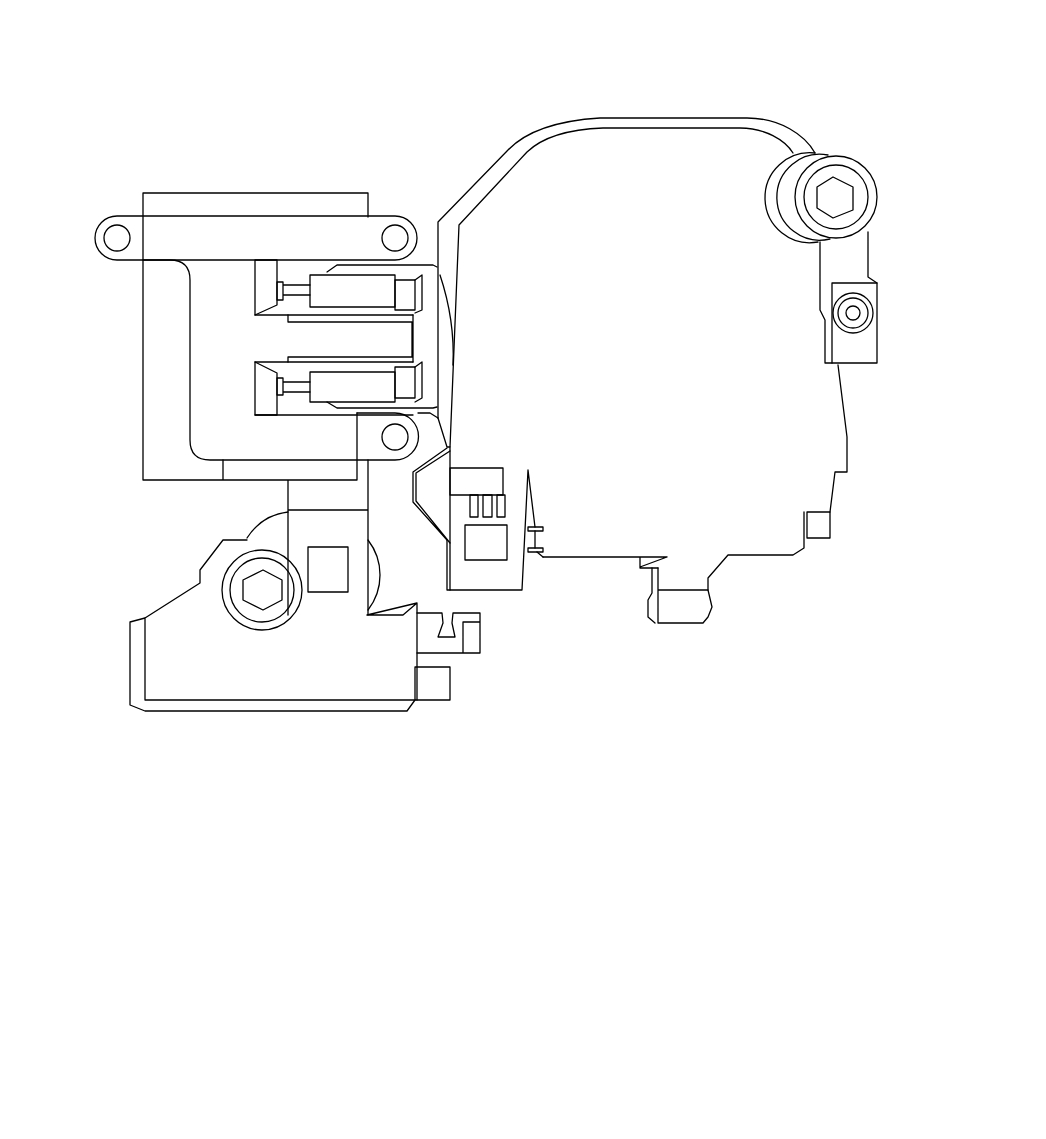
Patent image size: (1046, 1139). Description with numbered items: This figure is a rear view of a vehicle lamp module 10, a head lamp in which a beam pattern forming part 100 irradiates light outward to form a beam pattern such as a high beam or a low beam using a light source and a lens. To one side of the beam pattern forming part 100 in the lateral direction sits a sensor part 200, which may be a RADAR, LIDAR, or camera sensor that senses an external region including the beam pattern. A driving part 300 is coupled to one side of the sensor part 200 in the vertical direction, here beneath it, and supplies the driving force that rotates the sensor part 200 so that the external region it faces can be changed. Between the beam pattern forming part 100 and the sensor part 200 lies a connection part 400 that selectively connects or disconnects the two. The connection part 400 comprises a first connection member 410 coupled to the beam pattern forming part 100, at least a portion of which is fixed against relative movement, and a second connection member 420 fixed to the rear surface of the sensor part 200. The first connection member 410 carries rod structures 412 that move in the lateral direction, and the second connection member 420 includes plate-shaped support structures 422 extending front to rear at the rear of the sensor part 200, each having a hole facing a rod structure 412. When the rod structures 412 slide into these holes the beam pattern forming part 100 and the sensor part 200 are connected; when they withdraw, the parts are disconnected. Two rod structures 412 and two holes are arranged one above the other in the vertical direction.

The vehicle lamp module 10 is at (88, 41).
The beam pattern forming part 100 is at (652, 95).
The sensor part 200 is at (126, 378).
The driving part 300 is at (255, 732).
The connection part 400 is at (713, 737).
The first connection member 410 is at (363, 258).
The rod structure 412 is at (295, 292).
The second connection member 420 is at (174, 347).
The support structure 422 is at (268, 272).